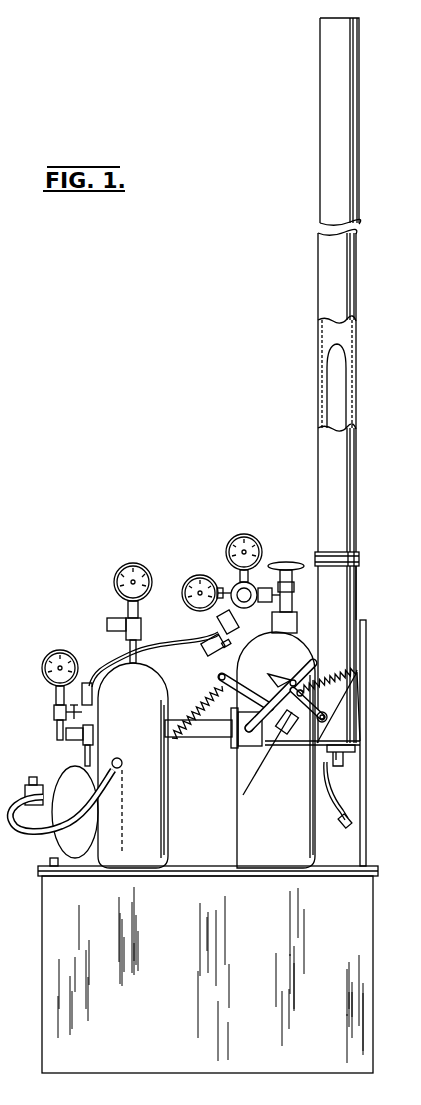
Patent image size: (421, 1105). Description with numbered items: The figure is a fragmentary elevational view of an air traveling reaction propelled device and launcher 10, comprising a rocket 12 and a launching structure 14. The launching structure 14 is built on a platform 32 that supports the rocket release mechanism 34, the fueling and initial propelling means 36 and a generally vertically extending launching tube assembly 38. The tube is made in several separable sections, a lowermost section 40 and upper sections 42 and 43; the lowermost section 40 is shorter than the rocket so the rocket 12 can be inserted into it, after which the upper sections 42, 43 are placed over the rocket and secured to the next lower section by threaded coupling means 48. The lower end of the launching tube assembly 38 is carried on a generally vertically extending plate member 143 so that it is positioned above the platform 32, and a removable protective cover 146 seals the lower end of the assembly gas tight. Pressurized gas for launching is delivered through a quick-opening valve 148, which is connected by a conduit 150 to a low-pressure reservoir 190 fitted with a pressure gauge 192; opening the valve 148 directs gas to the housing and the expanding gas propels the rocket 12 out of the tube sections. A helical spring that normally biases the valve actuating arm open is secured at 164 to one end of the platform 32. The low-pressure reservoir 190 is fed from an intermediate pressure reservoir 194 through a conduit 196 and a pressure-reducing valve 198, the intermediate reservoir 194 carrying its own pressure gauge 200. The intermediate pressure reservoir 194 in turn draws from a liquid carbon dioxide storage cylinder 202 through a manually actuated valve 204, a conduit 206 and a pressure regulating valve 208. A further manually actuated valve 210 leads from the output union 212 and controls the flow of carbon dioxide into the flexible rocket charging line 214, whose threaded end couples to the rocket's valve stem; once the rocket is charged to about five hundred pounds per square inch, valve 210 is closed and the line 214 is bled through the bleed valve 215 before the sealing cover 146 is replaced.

The air traveling reaction propelled device and launcher 10 is at (196, 431).
The rocket 12 is at (329, 389).
The launching structure 14 is at (376, 846).
The platform 32 is at (45, 866).
The rocket release mechanism 34 is at (290, 747).
The fueling and initial propelling means 36 is at (104, 640).
The launching tube assembly 38 is at (358, 587).
The lowermost tube section 40 is at (323, 609).
The upper tube section 42 is at (325, 502).
The upper tube section 43 is at (323, 144).
The threaded coupling means 48 is at (318, 555).
The vertically extending plate member 143 is at (366, 631).
The removable protective cover 146 is at (345, 760).
The quick-opening valve 148 is at (245, 748).
The conduit 150 is at (200, 738).
The spring attachment point 164 is at (54, 868).
The low-pressure reservoir 190 is at (157, 838).
The pressure gauge 192 is at (121, 571).
The intermediate pressure reservoir 194 is at (66, 782).
The conduit 196 is at (90, 832).
The pressure-reducing valve 198 is at (33, 785).
The pressure gauge 200 is at (22, 645).
The liquid carbon dioxide storage cylinder 202 is at (272, 869).
The manually actuated valve 204 is at (57, 712).
The conduit 206 is at (98, 654).
The pressure regulating valve 208 is at (231, 556).
The manually actuated valve 210 is at (214, 628).
The output union 212 is at (238, 622).
The flexible rocket charging line 214 is at (220, 678).
The bleed valve 215 is at (206, 646).